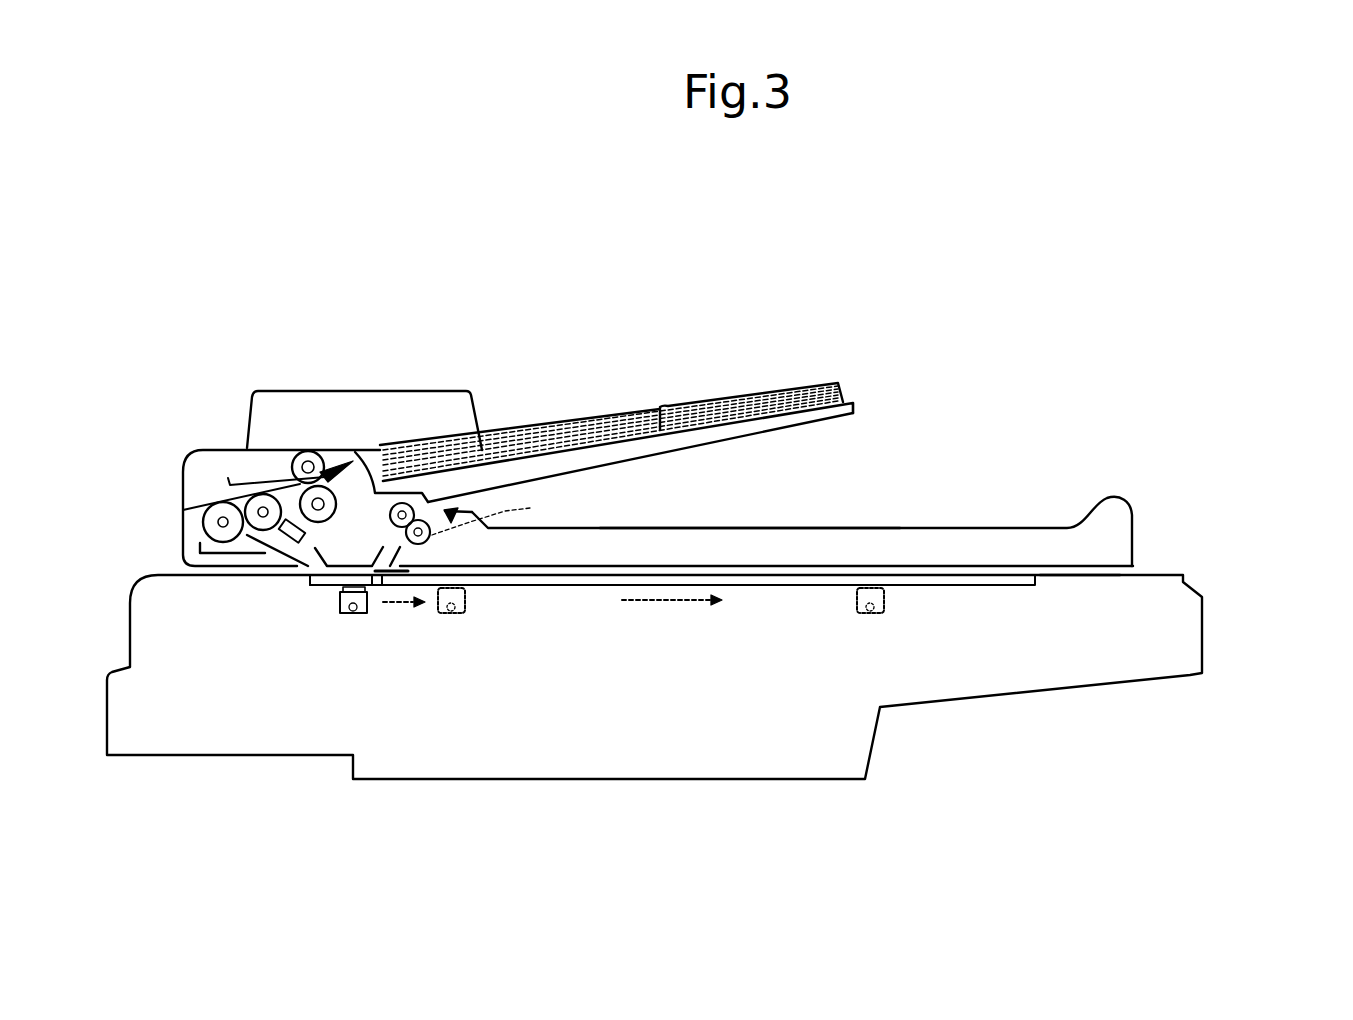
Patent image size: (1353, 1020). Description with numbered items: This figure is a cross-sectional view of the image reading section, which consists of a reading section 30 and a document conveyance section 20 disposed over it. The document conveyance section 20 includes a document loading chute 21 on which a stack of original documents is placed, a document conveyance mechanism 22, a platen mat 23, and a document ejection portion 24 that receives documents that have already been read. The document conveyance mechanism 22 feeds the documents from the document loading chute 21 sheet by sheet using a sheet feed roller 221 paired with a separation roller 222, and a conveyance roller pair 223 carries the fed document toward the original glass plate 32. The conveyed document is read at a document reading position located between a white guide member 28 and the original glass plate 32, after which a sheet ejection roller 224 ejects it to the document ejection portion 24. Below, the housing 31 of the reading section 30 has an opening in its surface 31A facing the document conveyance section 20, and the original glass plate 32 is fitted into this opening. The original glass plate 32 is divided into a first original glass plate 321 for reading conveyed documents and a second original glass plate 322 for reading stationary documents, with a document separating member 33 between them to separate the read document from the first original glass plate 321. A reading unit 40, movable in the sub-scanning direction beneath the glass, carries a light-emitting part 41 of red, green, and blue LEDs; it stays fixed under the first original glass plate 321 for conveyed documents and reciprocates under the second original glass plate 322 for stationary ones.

The document conveyance section 20 is at (671, 449).
The document loading chute 21 is at (847, 403).
The document conveyance mechanism 22 is at (208, 462).
The platen mat 23 is at (745, 530).
The document ejection portion 24 is at (947, 527).
The white guide member 28 is at (345, 565).
The reading section 30 is at (711, 657).
The housing 31 is at (1204, 630).
The surface of the housing 31A is at (1072, 577).
The original glass plate 32 is at (570, 597).
The document separating member 33 is at (378, 588).
The reading unit 40 is at (340, 610).
The light-emitting part 41 is at (353, 614).
The sheet feed roller 221 is at (322, 458).
The separation roller 222 is at (368, 452).
The conveyance roller pair 223 is at (230, 494).
The sheet ejection roller 224 is at (480, 519).
The first original glass plate 321 is at (308, 585).
The second original glass plate 322 is at (832, 583).